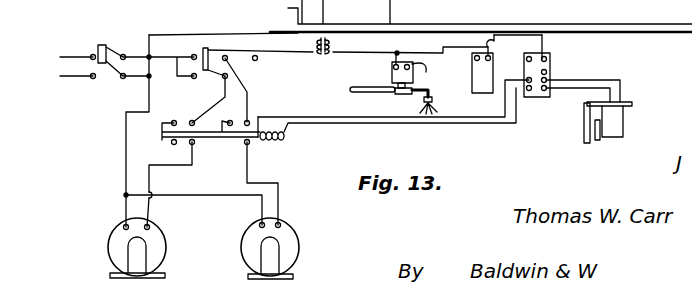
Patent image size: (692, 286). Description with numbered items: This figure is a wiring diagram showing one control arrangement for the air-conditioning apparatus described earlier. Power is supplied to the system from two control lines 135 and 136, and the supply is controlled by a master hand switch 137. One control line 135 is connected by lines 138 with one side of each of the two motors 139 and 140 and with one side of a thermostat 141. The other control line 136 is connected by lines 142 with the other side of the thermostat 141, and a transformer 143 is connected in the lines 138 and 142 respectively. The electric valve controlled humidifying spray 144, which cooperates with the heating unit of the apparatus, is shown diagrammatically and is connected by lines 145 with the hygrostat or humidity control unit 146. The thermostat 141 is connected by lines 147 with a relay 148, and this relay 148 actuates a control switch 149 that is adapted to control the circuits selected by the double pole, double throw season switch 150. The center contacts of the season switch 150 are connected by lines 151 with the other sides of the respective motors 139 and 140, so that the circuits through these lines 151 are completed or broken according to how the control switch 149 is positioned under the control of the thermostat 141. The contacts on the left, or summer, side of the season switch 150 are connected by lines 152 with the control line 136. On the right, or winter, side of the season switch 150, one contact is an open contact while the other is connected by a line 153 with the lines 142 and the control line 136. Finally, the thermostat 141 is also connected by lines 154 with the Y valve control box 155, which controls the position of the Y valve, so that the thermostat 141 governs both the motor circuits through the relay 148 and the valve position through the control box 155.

The control line 135 is at (72, 77).
The control line 136 is at (80, 54).
The master hand switch 137 is at (107, 36).
The lines 138 is at (173, 35).
The motor 139 is at (117, 250).
The motor 140 is at (298, 249).
The thermostat 141 is at (547, 72).
The lines 142 is at (273, 52).
The transformer 143 is at (326, 59).
The electric valve controlled humidifying spray 144 is at (412, 105).
The lines 145 is at (390, 68).
The hygrostat 146 is at (478, 82).
The lines 147 is at (494, 118).
The relay 148 is at (297, 141).
The control switch 149 is at (253, 143).
The season switch 150 is at (207, 71).
The lines 151 is at (248, 100).
The lines 152 is at (186, 78).
The line 153 is at (258, 53).
The lines 154 is at (578, 90).
The Y valve control box 155 is at (620, 120).